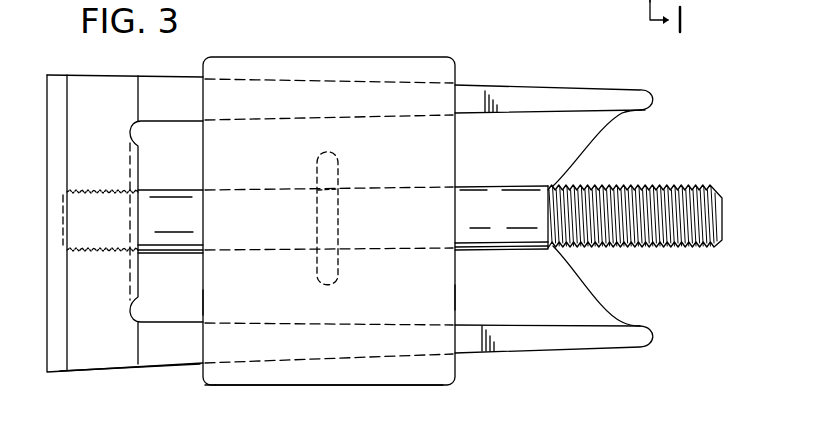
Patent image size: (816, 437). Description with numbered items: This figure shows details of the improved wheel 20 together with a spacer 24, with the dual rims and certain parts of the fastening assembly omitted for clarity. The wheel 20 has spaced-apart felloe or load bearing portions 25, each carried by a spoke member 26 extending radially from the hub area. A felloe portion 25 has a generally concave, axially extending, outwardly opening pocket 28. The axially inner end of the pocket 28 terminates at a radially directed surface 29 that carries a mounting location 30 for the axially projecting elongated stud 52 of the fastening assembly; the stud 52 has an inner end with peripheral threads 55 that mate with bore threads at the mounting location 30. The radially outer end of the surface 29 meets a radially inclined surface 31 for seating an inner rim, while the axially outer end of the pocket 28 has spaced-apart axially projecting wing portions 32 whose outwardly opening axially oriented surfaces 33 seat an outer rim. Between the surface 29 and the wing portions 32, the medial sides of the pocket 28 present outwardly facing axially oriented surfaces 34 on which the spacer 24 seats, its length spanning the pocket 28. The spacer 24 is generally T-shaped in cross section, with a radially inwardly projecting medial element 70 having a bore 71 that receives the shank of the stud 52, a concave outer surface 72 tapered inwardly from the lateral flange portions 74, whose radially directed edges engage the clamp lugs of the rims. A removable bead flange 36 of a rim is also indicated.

The wheel 20 is at (680, 283).
The spacer 24 is at (342, 57).
The felloe portion 25 is at (127, 378).
The spoke member 26 is at (604, 11).
The pocket 28 is at (543, 265).
The radially directed surface 29 is at (138, 172).
The mounting location 30 is at (138, 227).
The radially inclined surface 31 is at (108, 98).
The wing portion 32 is at (553, 85).
The axially oriented surface 33 is at (528, 103).
The axially oriented surface 34 is at (298, 93).
The removable bead flange 36 is at (218, 411).
The elongated stud 52 is at (507, 192).
The peripheral threads 55 is at (97, 253).
The medial element 70 is at (340, 165).
The bore 71 is at (332, 192).
The concave outer surface 72 is at (318, 377).
The flange portion 74 is at (203, 302).